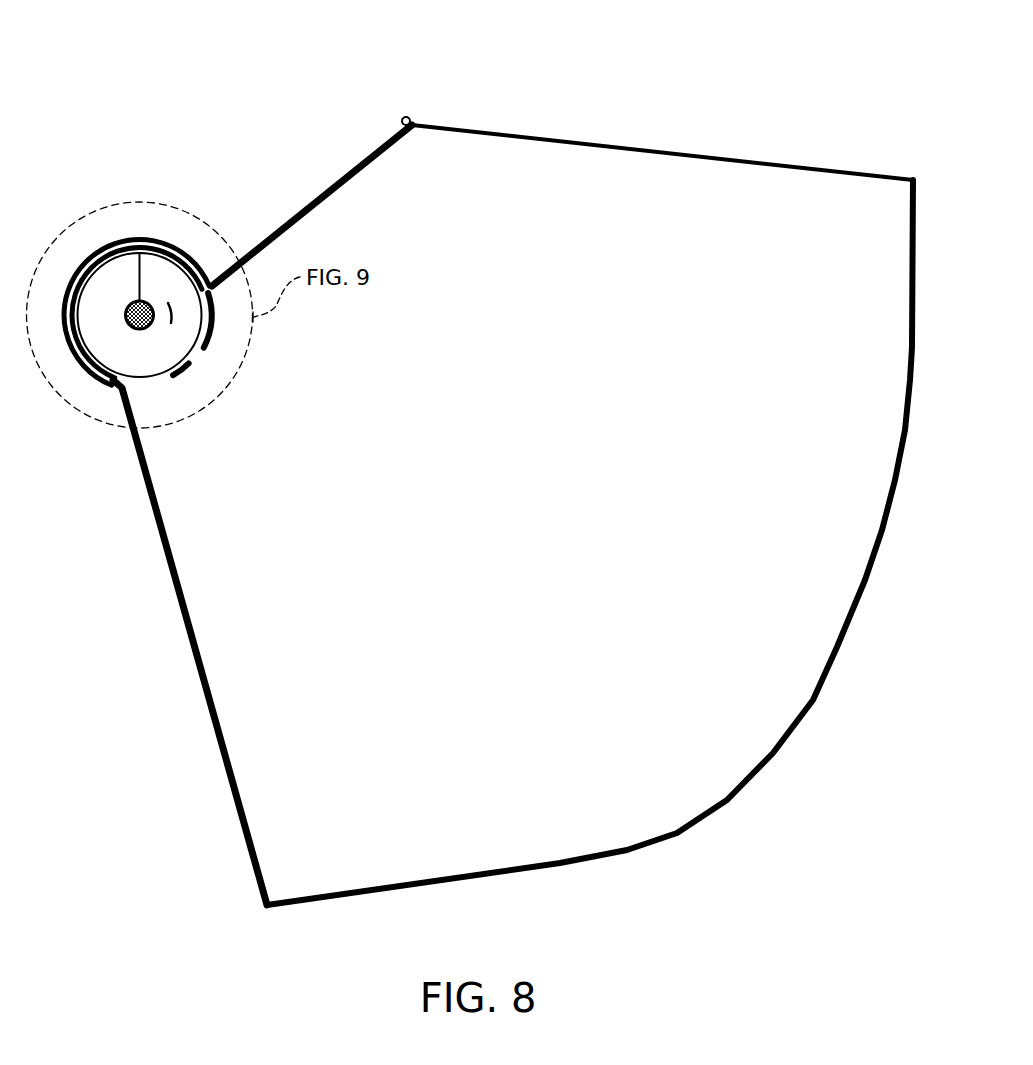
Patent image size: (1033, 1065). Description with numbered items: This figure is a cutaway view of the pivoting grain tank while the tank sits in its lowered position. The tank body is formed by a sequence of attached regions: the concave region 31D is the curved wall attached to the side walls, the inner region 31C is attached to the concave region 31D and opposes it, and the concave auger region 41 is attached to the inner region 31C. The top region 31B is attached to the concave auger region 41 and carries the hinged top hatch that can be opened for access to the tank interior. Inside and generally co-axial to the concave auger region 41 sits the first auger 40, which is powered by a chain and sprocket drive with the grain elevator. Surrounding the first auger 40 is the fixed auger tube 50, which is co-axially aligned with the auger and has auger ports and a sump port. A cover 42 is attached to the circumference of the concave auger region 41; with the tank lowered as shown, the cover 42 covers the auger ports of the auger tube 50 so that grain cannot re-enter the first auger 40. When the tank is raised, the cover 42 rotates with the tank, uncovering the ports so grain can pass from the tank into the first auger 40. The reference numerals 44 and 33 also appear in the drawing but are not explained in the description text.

The top region 31B is at (365, 157).
The inner region 31C is at (223, 765).
The concave region 31D is at (810, 710).
The top edge member 44 is at (657, 151).
The first auger 40 is at (116, 277).
The concave auger region 41 is at (157, 242).
The cover 42 is at (213, 327).
The auger tube 50 is at (190, 256).
The shaft hub 33 is at (133, 328).